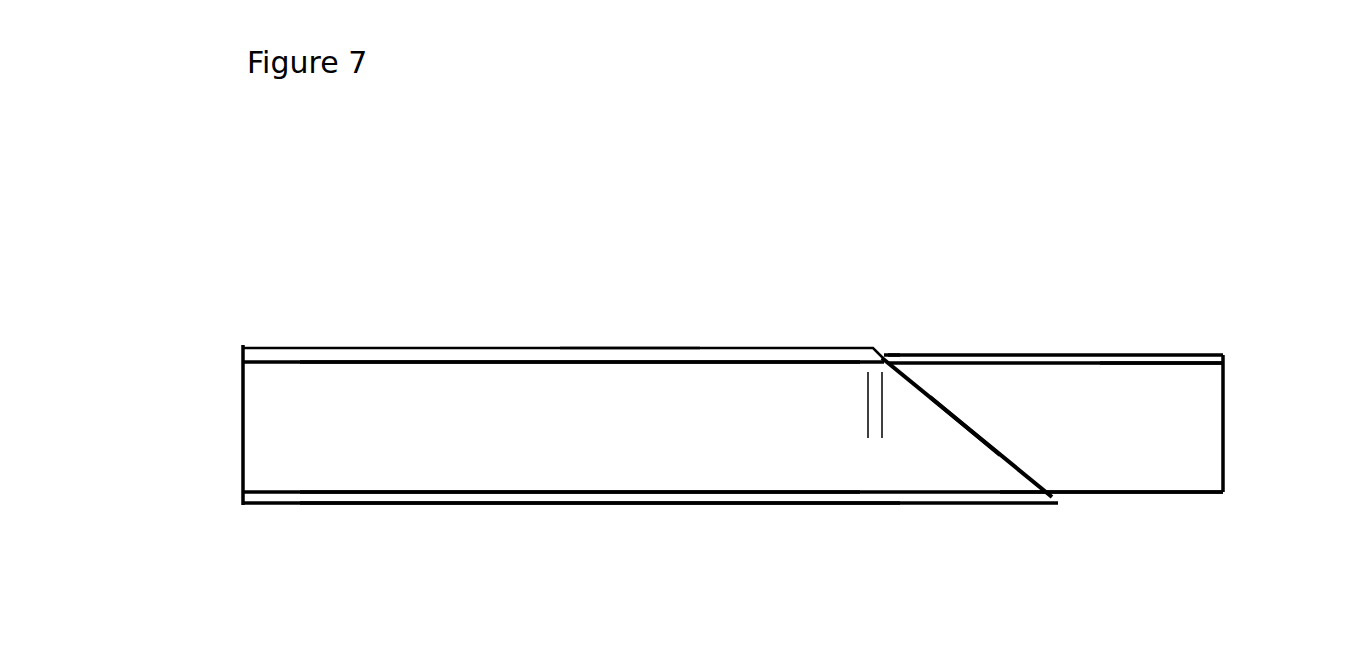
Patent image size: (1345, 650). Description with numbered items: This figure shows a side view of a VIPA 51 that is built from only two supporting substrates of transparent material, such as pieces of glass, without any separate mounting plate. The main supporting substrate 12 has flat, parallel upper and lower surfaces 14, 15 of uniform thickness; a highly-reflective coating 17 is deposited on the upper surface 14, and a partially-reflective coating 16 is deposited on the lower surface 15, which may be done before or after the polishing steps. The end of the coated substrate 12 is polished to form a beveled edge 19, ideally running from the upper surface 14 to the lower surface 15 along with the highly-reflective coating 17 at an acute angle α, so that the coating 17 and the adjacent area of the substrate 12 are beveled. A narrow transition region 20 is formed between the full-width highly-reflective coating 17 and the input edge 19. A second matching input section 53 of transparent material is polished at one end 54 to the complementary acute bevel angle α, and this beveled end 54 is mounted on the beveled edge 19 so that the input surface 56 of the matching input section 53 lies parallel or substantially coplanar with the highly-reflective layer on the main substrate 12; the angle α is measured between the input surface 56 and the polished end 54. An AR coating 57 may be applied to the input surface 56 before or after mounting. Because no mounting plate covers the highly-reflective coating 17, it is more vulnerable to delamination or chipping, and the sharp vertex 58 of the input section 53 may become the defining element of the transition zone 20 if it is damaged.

The main supporting substrate 12 is at (510, 444).
The upper surface 14 is at (337, 363).
The lower surface 15 is at (368, 487).
The partially-reflective coating 16 is at (565, 507).
The highly-reflective coating 17 is at (248, 356).
The beveled edge 19 is at (967, 443).
The transition region 20 is at (875, 437).
The VIPA 51 is at (587, 173).
The matching input section 53 is at (1160, 464).
The polished end 54 is at (963, 418).
The input surface 56 is at (1168, 372).
The AR coating 57 is at (1078, 352).
The sharp vertex 58 is at (895, 352).